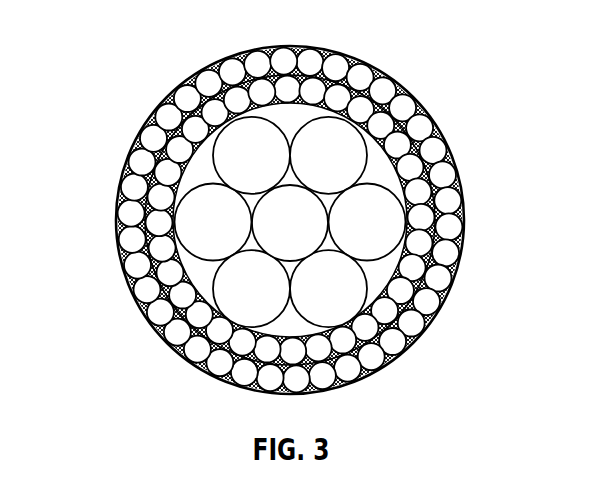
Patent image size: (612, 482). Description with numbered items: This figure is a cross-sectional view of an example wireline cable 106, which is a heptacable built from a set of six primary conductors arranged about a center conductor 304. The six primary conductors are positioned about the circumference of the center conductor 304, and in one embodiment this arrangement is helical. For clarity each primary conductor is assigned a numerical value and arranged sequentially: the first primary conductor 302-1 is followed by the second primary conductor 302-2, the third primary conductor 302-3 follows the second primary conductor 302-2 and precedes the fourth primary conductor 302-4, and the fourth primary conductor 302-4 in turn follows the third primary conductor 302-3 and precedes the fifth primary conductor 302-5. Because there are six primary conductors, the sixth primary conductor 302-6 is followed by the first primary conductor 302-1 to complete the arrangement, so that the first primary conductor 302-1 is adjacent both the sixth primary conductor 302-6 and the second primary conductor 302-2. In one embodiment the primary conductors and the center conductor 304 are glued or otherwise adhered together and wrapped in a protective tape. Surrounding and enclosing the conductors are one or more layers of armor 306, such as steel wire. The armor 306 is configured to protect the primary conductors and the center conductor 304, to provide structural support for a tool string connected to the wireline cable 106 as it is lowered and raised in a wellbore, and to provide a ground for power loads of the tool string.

The wireline cable 106 is at (407, 88).
The armor 306 is at (242, 100).
The center conductor 304 is at (313, 237).
The first primary conductor 302-1 is at (182, 227).
The second primary conductor 302-2 is at (220, 158).
The third primary conductor 302-3 is at (360, 160).
The fourth primary conductor 302-4 is at (336, 227).
The fifth primary conductor 302-5 is at (360, 294).
The sixth primary conductor 302-6 is at (220, 295).